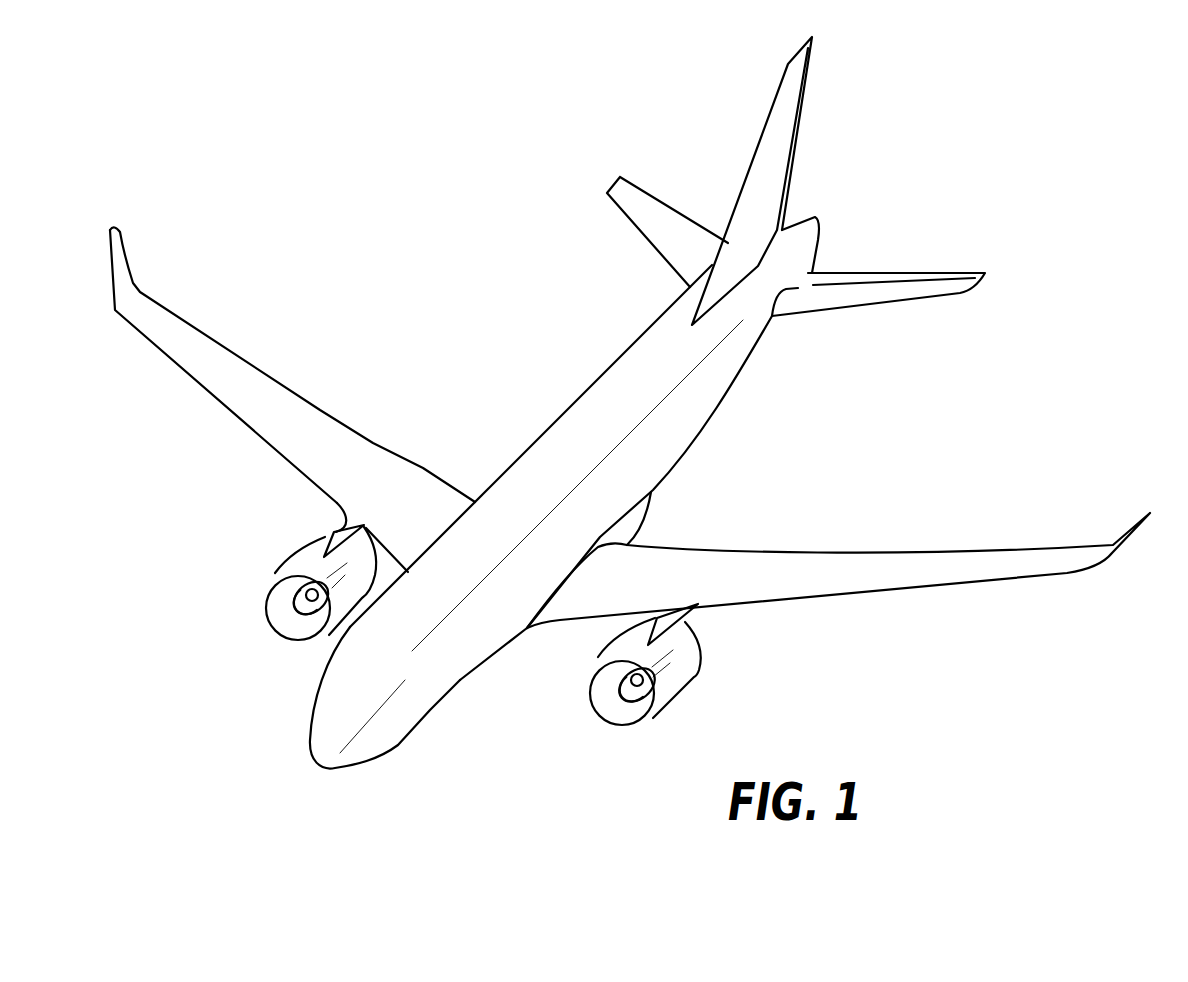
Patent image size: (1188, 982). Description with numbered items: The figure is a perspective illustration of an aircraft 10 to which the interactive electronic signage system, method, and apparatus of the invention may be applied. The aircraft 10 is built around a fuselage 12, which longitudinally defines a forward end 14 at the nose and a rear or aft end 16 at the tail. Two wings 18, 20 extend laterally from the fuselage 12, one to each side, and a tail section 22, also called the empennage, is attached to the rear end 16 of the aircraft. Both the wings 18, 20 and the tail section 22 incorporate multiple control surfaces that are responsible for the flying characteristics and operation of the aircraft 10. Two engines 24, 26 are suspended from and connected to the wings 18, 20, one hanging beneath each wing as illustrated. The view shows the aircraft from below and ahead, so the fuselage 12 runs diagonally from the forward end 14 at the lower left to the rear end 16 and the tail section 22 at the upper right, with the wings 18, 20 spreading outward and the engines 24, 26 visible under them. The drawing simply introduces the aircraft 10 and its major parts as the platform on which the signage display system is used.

The aircraft 10 is at (1078, 310).
The fuselage 12 is at (697, 432).
The forward end 14 is at (313, 762).
The rear end 16 is at (820, 218).
The wing 18 is at (817, 563).
The wing 20 is at (317, 420).
The tail section 22 is at (780, 173).
The engine 24 is at (680, 675).
The engine 26 is at (297, 562).